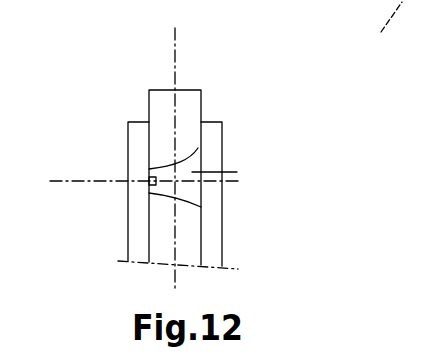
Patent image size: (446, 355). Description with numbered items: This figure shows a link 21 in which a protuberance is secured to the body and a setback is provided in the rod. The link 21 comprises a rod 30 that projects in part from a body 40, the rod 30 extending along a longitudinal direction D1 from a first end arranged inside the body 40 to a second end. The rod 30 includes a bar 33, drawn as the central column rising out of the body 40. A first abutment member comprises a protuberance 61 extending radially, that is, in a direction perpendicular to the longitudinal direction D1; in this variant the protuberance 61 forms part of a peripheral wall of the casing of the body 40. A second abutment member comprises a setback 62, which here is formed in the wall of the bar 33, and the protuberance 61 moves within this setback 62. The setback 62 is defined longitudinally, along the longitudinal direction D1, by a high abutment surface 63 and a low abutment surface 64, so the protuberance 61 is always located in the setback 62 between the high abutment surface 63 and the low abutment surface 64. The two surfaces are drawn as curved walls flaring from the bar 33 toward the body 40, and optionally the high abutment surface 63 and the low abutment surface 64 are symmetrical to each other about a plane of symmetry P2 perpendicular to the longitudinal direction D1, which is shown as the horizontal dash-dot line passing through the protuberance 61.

The link 21 is at (224, 144).
The rod 30 is at (188, 90).
The bar 33 is at (153, 101).
The body 40 is at (222, 130).
The protuberance 61 is at (149, 181).
The setback 62 is at (237, 172).
The high abutment surface 63 is at (198, 148).
The low abutment surface 64 is at (190, 201).
The longitudinal direction D1 is at (175, 47).
The plane of symmetry P2 is at (68, 181).